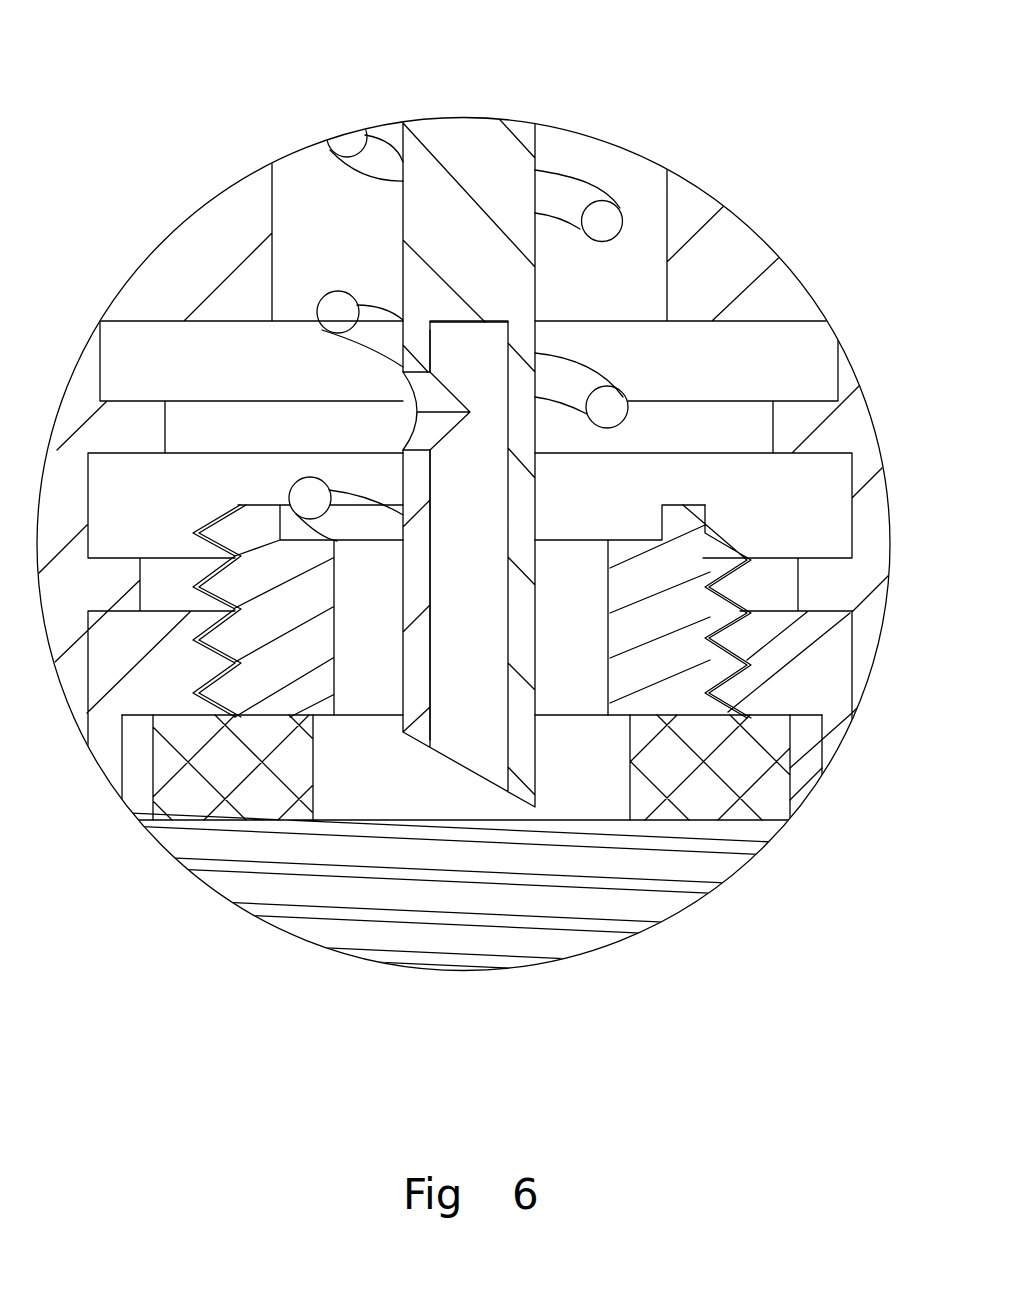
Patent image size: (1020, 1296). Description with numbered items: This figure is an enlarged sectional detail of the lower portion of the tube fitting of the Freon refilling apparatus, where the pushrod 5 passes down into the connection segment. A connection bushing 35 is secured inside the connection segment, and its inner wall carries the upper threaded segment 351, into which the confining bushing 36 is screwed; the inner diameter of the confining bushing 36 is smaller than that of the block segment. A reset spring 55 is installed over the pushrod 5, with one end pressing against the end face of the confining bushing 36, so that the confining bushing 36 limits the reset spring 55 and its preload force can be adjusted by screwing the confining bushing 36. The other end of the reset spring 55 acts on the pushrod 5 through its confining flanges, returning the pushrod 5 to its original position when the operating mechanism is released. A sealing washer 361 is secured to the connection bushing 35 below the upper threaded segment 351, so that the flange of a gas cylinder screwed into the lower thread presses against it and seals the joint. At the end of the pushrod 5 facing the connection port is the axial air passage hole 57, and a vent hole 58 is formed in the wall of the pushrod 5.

The pushrod 5 is at (473, 232).
The reset spring 55 is at (607, 223).
The vent hole 58 is at (427, 425).
The connection bushing 35 is at (136, 660).
The upper threaded segment 351 is at (728, 677).
The confining bushing 36 is at (650, 622).
The sealing washer 361 is at (232, 763).
The air passage hole 57 is at (472, 645).